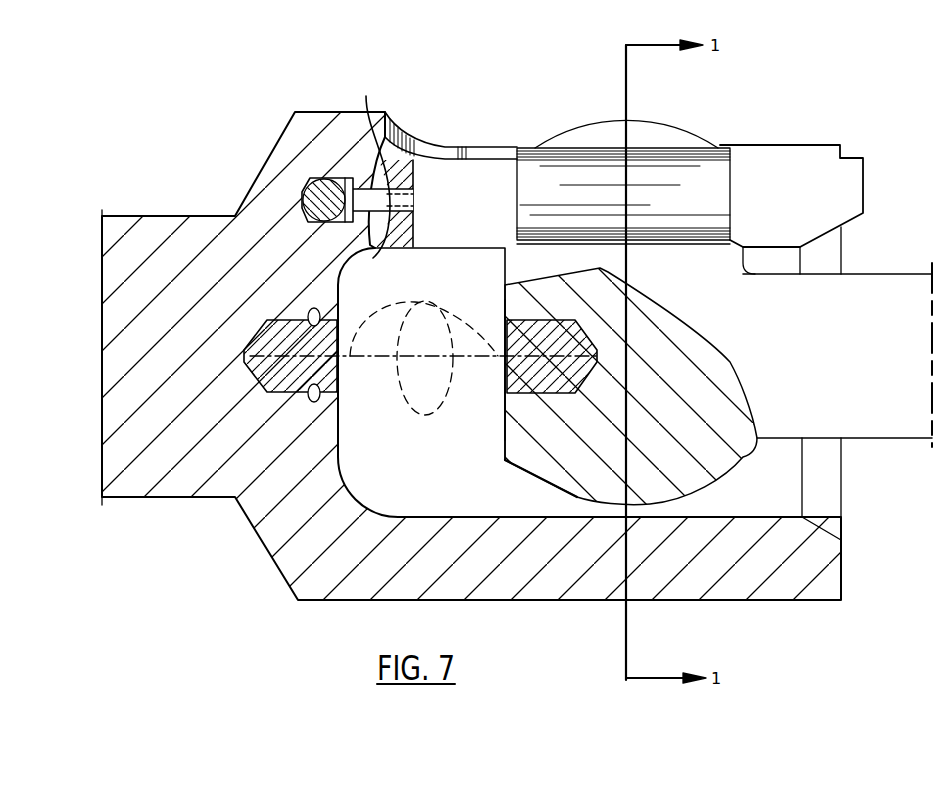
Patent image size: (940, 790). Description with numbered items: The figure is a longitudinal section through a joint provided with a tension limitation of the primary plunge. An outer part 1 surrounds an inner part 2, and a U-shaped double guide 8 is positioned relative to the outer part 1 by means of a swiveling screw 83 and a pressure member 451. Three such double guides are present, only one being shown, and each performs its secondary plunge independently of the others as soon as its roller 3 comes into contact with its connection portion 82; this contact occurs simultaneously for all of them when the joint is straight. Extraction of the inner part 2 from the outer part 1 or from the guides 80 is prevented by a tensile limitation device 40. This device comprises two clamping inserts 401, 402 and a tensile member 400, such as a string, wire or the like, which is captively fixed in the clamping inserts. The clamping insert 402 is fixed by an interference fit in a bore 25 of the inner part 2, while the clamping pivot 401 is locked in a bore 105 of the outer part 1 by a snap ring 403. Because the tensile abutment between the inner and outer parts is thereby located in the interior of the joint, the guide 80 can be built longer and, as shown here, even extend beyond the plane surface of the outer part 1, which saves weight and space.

The outer part 1 is at (130, 222).
The inner part 2 is at (723, 461).
The roller 3 is at (601, 170).
The double guide 8 is at (482, 159).
The bore 25 is at (573, 392).
The tensile limitation device 40 is at (351, 352).
The guide 80 is at (800, 158).
The connection portion 82 is at (418, 182).
The swiveling screw 83 is at (366, 100).
The bore 105 is at (260, 385).
The tensile member 400 is at (447, 410).
The clamping insert 401 is at (341, 386).
The clamping insert 402 is at (505, 427).
The snap ring 403 is at (339, 416).
The pressure member 451 is at (301, 199).